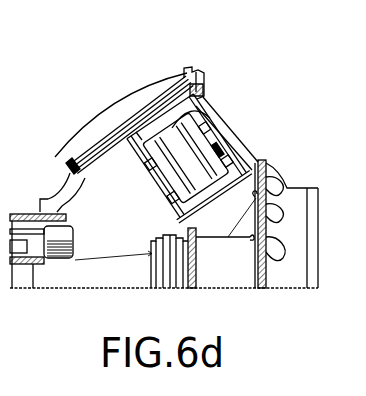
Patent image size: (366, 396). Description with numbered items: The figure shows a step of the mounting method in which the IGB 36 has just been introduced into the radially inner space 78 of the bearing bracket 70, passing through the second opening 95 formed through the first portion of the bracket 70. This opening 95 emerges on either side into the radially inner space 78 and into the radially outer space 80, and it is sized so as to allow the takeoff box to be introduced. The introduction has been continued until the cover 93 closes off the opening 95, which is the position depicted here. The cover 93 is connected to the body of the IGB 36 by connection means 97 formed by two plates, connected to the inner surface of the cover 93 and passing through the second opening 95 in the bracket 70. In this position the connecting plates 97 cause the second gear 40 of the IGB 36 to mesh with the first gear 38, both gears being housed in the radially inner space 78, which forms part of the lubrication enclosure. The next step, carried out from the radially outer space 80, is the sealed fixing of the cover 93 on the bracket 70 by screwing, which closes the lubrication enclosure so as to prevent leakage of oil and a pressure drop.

The IGB 36 is at (222, 149).
The first gear 38 is at (197, 262).
The second gear 40 is at (118, 126).
The bearing bracket 70 is at (206, 88).
The radially inner space 78 is at (271, 183).
The radially outer space 80 is at (75, 134).
The cover 93 is at (123, 118).
The second opening 95 is at (74, 163).
The connection means 97 is at (140, 138).